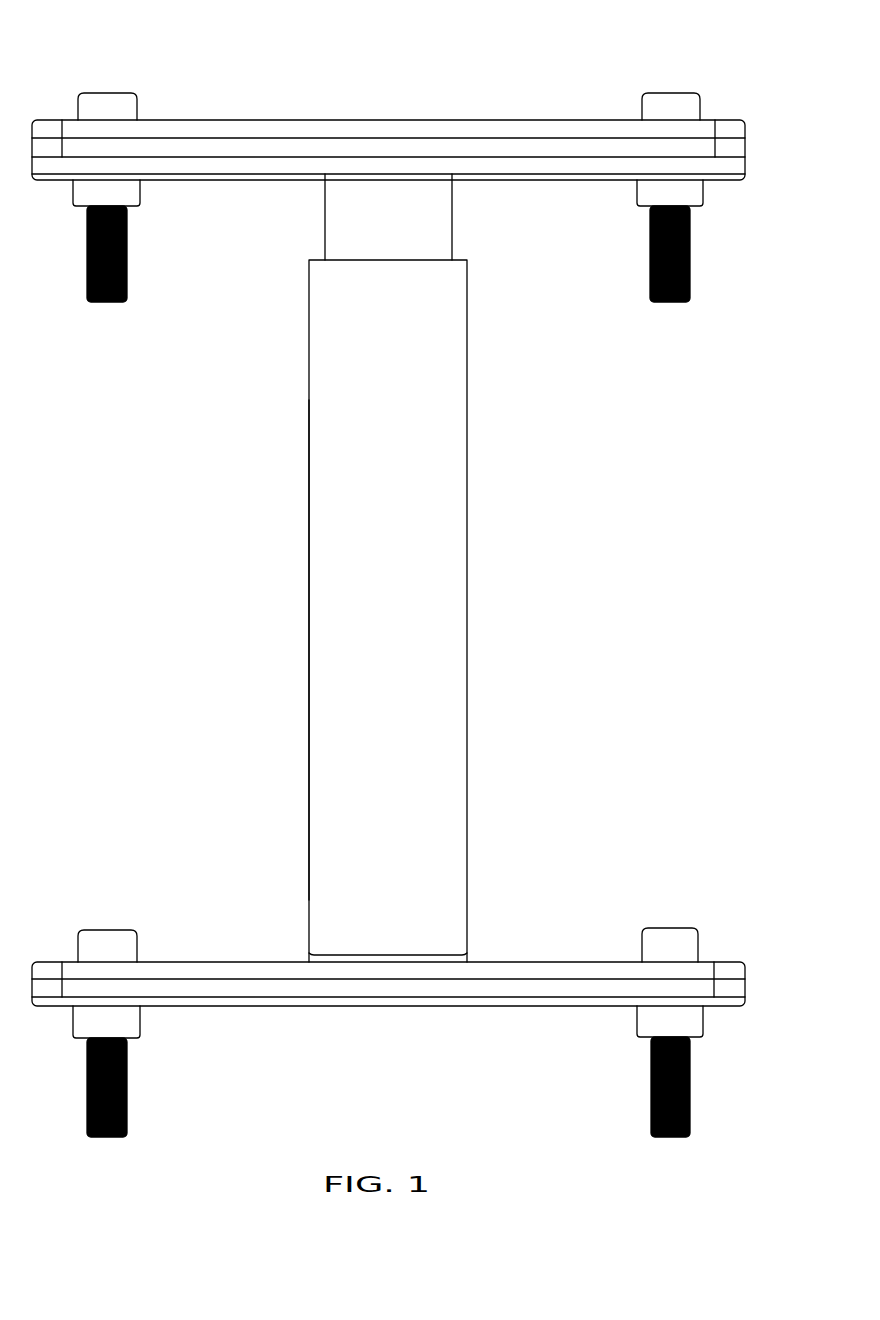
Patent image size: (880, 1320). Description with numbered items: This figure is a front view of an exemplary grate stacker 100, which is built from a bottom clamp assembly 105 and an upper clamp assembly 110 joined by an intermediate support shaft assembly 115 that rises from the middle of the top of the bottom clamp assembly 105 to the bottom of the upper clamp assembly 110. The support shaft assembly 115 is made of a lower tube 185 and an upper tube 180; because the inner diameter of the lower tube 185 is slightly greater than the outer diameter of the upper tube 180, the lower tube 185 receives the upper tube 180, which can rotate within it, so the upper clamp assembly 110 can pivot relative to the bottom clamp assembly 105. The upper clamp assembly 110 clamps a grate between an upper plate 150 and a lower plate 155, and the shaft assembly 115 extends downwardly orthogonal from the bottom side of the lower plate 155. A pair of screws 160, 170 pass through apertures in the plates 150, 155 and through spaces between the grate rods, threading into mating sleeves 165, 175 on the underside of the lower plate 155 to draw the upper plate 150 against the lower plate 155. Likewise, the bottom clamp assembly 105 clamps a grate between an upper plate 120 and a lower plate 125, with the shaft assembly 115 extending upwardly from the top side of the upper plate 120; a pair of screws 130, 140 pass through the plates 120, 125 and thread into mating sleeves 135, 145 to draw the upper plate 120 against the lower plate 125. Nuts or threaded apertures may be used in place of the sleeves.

The grate stacker 100 is at (408, 990).
The bottom clamp assembly 105 is at (738, 982).
The upper clamp assembly 110 is at (414, 150).
The intermediate support shaft assembly 115 is at (467, 603).
The upper plate 120 is at (518, 970).
The lower plate 125 is at (528, 989).
The screw 130 is at (652, 948).
The sleeve 135 is at (643, 1020).
The screw 140 is at (117, 947).
The sleeve 145 is at (135, 1022).
The upper plate 150 is at (267, 128).
The lower plate 155 is at (227, 155).
The screw 160 is at (645, 108).
The sleeve 165 is at (695, 193).
The screw 170 is at (117, 110).
The sleeve 175 is at (142, 193).
The upper tube 180 is at (415, 233).
The lower tube 185 is at (445, 738).